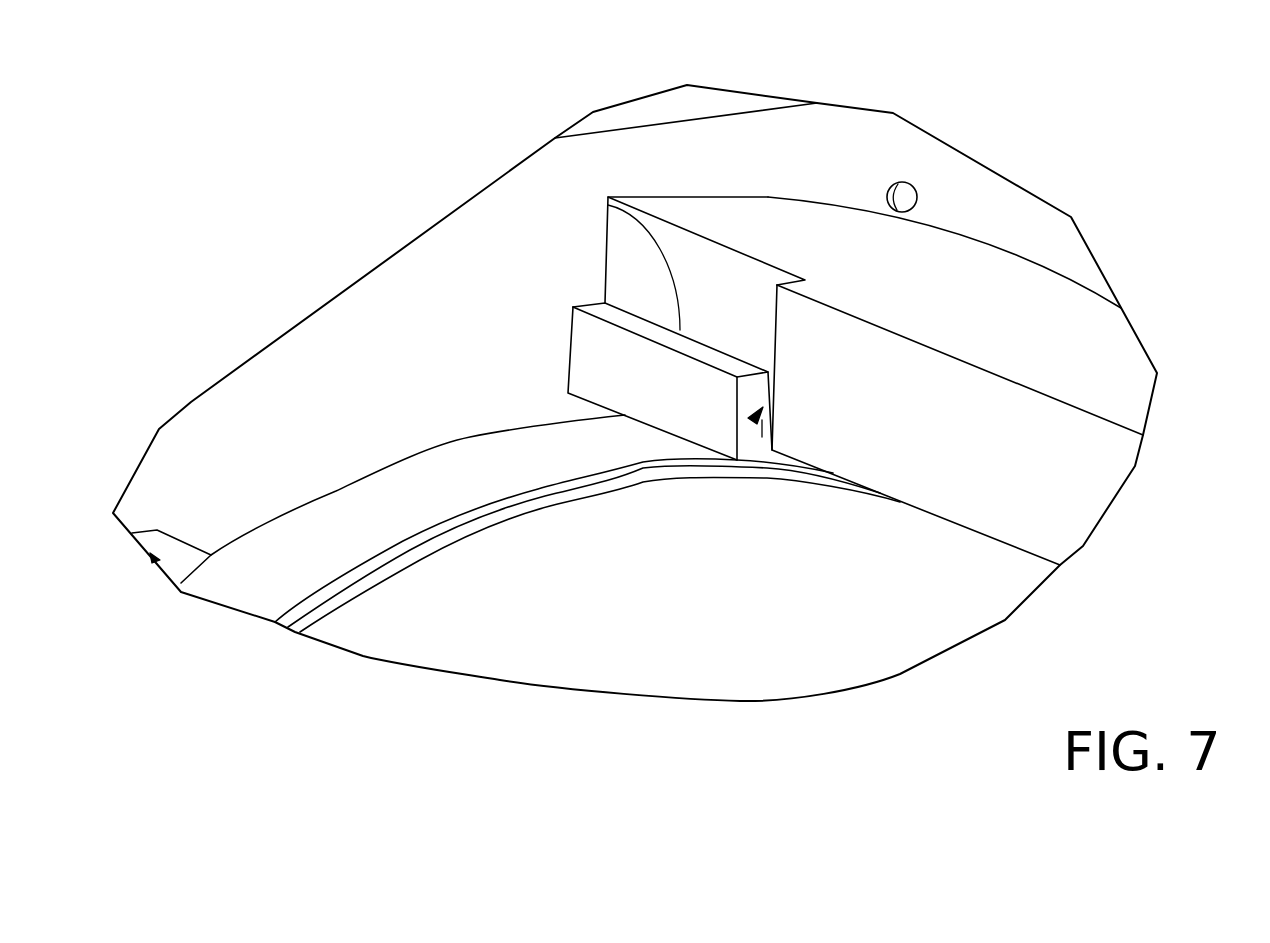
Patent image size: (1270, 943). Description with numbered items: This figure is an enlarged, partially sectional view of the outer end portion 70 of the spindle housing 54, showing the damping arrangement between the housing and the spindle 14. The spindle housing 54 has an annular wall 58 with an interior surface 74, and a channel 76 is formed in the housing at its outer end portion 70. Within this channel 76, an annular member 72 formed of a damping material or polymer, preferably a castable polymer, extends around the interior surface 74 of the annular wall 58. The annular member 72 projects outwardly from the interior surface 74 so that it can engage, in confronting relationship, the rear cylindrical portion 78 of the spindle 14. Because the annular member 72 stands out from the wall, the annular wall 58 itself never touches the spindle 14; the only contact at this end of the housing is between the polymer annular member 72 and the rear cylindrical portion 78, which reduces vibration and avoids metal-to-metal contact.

The spindle 14 is at (900, 578).
The spindle housing 54 is at (1040, 320).
The annular wall 58 is at (1036, 460).
The outer end portion 70 is at (816, 235).
The annular member 72 is at (615, 373).
The interior surface 74 is at (608, 210).
The channel 76 is at (763, 407).
The rear cylindrical portion 78 is at (418, 495).